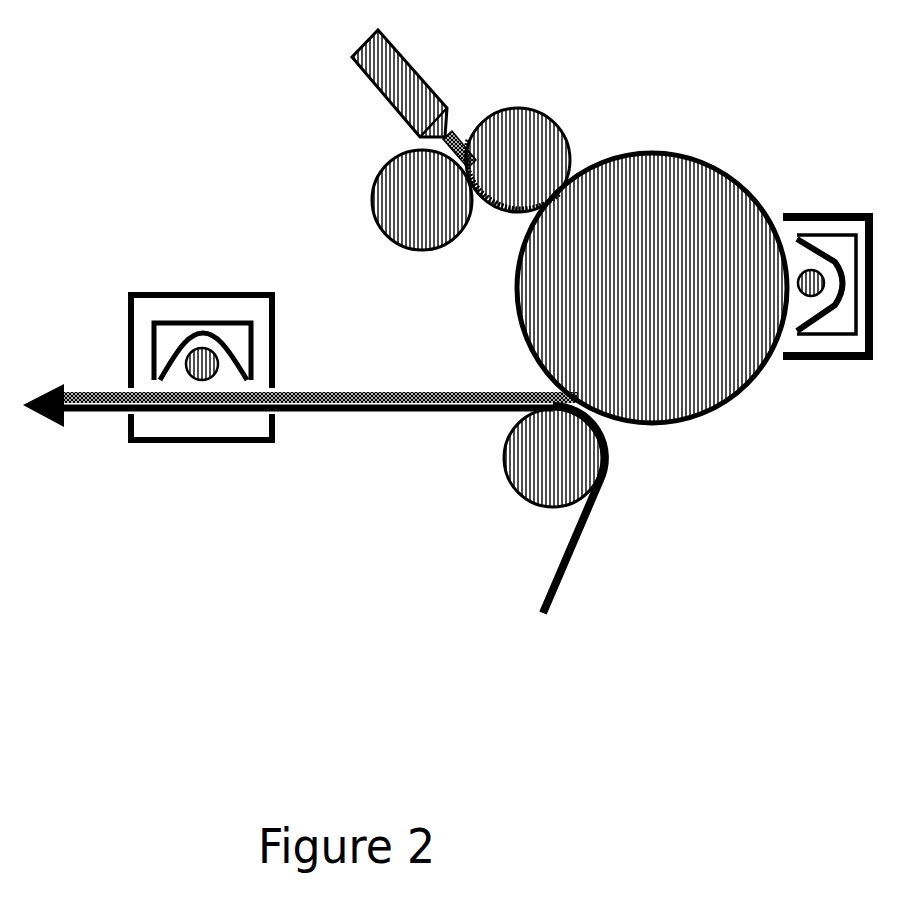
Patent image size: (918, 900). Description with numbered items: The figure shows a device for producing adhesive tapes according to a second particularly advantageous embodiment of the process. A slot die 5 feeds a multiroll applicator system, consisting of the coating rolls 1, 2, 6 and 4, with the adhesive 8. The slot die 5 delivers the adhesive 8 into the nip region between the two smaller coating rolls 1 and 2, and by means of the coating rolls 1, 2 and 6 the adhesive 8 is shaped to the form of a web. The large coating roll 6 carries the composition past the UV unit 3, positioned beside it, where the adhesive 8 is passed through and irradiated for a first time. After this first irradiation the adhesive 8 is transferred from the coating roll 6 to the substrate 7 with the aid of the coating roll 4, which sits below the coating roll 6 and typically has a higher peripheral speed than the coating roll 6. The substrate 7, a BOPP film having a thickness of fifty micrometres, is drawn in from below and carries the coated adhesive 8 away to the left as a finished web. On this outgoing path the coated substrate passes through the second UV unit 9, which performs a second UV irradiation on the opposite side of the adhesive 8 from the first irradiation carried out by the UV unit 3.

The coating roll 1 is at (392, 188).
The coating roll 2 is at (519, 125).
The UV unit 3 is at (838, 256).
The coating roll 4 is at (544, 441).
The slot die 5 is at (376, 70).
The coating roll 6 is at (678, 185).
The substrate 7 is at (577, 554).
The adhesive 8 is at (299, 393).
The UV unit 9 is at (215, 307).